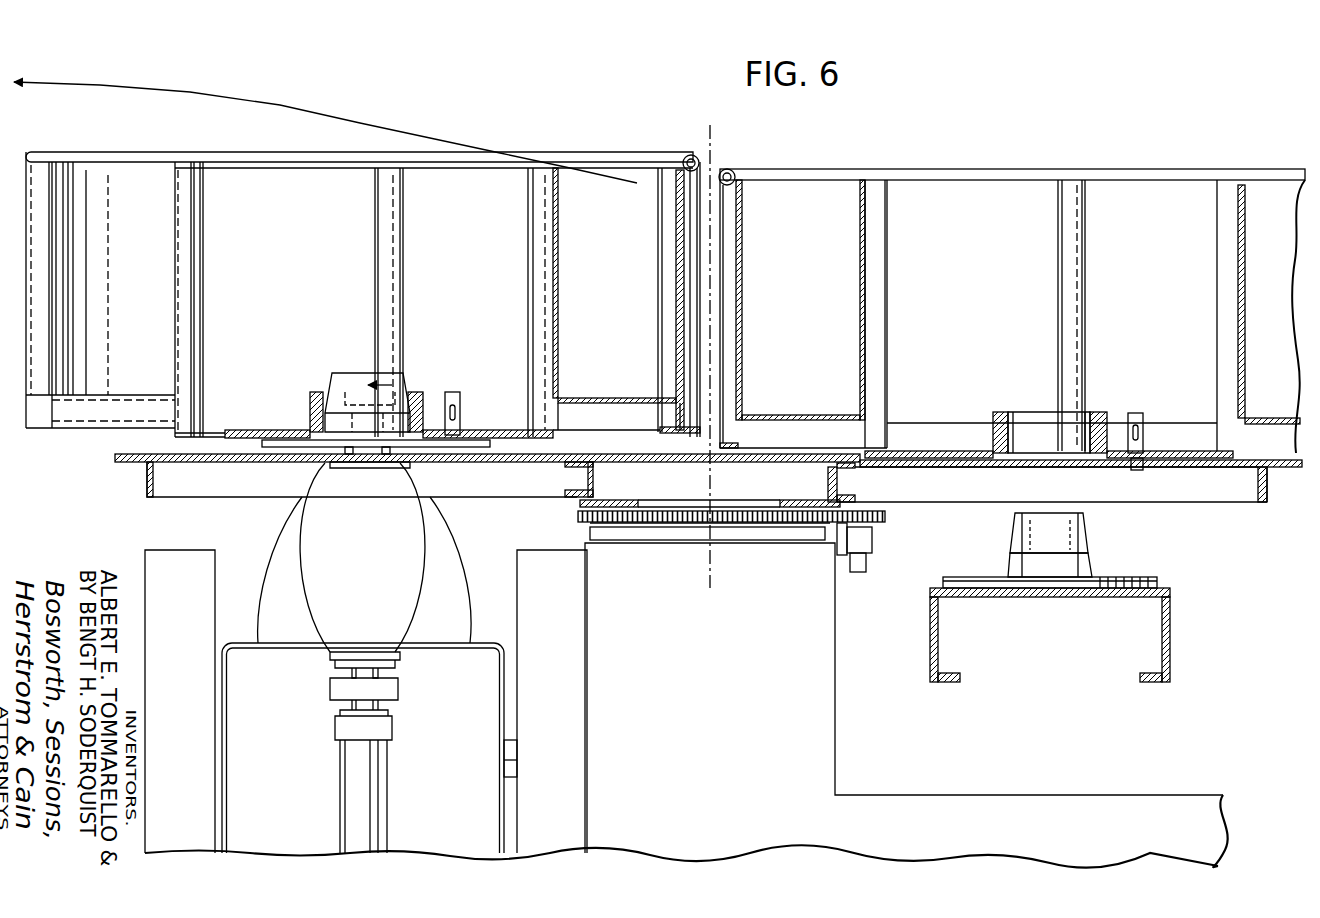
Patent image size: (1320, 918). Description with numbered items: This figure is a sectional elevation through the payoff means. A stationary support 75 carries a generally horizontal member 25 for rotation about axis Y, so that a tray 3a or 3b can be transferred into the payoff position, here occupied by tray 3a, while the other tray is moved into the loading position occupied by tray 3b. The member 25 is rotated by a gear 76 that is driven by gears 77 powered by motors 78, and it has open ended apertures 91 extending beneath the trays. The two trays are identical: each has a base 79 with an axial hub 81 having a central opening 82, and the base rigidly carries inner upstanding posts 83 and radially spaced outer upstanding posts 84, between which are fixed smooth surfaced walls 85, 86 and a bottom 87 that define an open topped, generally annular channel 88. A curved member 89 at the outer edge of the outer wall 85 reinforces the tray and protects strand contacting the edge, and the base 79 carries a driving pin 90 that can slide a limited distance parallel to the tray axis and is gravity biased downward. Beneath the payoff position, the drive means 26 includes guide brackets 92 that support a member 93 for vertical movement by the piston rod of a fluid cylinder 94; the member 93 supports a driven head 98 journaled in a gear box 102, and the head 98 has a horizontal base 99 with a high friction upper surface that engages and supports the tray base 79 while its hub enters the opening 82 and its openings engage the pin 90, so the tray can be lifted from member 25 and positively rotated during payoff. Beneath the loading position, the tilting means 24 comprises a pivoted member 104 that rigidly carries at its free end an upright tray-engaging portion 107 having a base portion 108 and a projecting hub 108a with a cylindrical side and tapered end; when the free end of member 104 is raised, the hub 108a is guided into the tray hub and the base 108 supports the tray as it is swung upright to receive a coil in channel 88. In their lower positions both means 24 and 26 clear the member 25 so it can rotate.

The tray 3a is at (600, 152).
The tray 3b is at (1160, 169).
The means for lifting and tilting a tray 24 is at (928, 645).
The horizontal member 25 is at (1228, 502).
The drive means 26 is at (472, 580).
The stationary support 75 is at (805, 555).
The gear 76 is at (688, 523).
The gears 77 is at (886, 522).
The motors 78 is at (878, 555).
The base 79 is at (242, 462).
The axial hub 81 is at (316, 392).
The central opening 82 is at (420, 400).
The inner upstanding posts 83 is at (405, 278).
The outer upstanding posts 84 is at (40, 187).
The outer wall 85 is at (676, 320).
The wall 86 is at (565, 332).
The bottom 87 is at (616, 396).
The annular channel 88 is at (612, 220).
The curved member 89 is at (536, 152).
The driving pin 90 is at (445, 440).
The apertures 91 is at (275, 450).
The guide brackets 92 is at (190, 562).
The member 93 is at (232, 718).
The fluid cylinder 94 is at (390, 758).
The driven head 98 is at (350, 372).
The horizontal base 99 is at (472, 462).
The gear box 102 is at (338, 633).
The pivoted member 104 is at (1170, 620).
The tray-engaging portion 107 is at (1090, 543).
The base portion 108 is at (985, 577).
The projecting hub 108a is at (1015, 536).
The axis Y is at (710, 575).